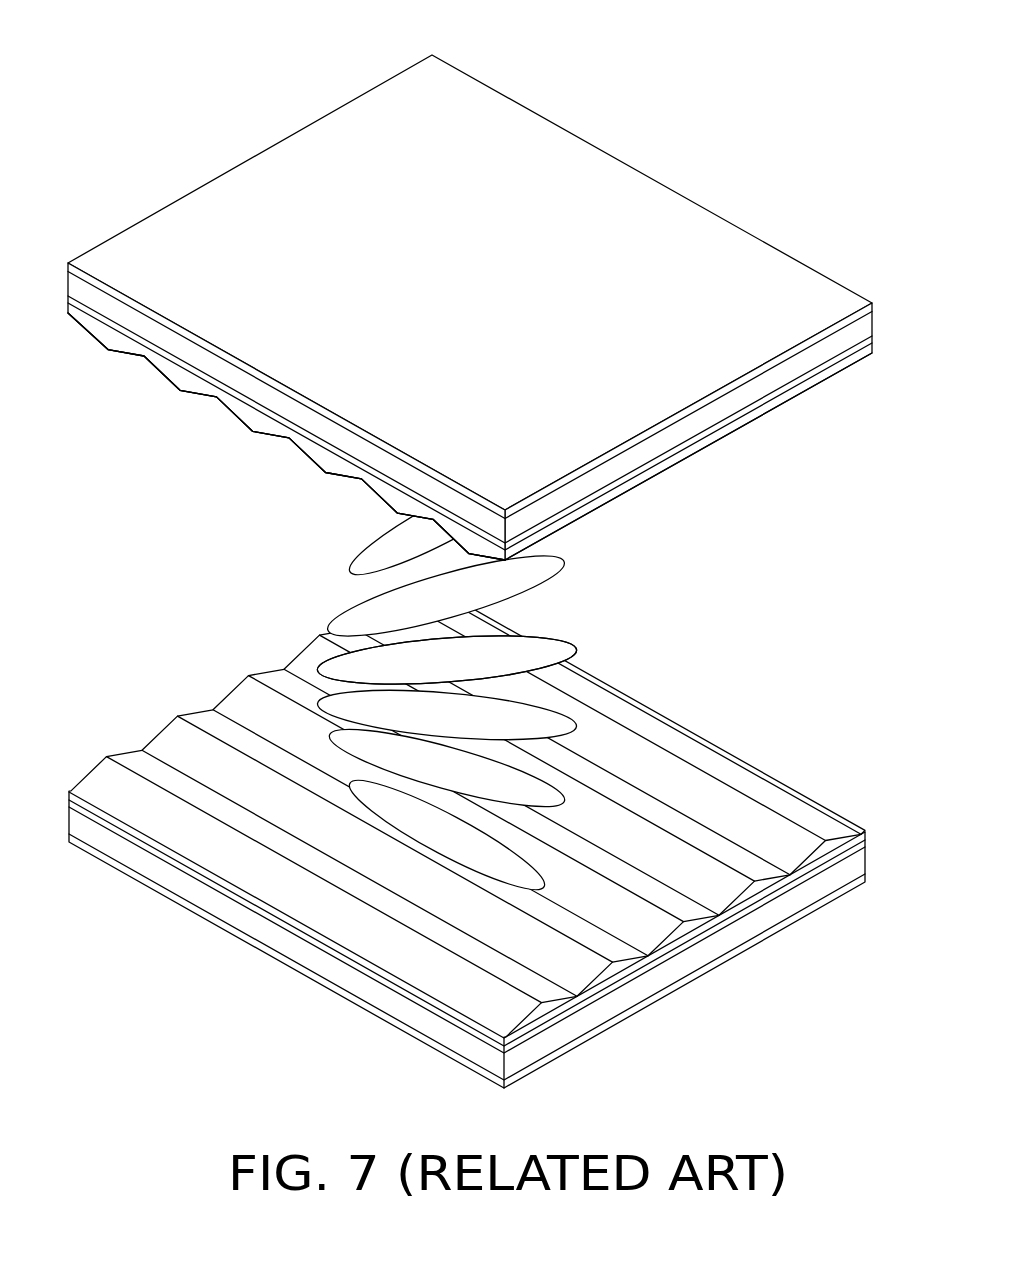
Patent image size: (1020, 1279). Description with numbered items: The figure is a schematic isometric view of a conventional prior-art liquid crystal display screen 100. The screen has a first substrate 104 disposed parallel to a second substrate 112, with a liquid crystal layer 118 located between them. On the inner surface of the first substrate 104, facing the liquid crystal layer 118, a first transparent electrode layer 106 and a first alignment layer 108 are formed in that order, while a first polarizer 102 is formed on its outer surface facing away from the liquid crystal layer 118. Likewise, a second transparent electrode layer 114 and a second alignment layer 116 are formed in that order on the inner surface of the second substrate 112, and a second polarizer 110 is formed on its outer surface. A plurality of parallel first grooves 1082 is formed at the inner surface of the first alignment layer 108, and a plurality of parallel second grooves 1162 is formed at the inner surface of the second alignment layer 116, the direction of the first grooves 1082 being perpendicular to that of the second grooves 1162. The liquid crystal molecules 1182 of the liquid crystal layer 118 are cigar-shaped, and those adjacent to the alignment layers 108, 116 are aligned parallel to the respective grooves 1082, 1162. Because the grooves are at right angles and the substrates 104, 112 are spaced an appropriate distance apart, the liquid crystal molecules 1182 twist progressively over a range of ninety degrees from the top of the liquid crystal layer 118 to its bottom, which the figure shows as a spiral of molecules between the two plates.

The liquid crystal display screen 100 is at (628, 46).
The first polarizer 102 is at (553, 1058).
The first substrate 104 is at (612, 1008).
The first transparent electrode layer 106 is at (745, 915).
The first alignment layer 108 is at (668, 945).
The first grooves 1082 is at (170, 740).
The second polarizer 110 is at (763, 367).
The second substrate 112 is at (732, 402).
The second transparent electrode layer 114 is at (690, 432).
The second alignment layer 116 is at (650, 470).
The second grooves 1162 is at (218, 400).
The liquid crystal layer 118 is at (570, 591).
The liquid crystal molecules 1182 is at (558, 650).